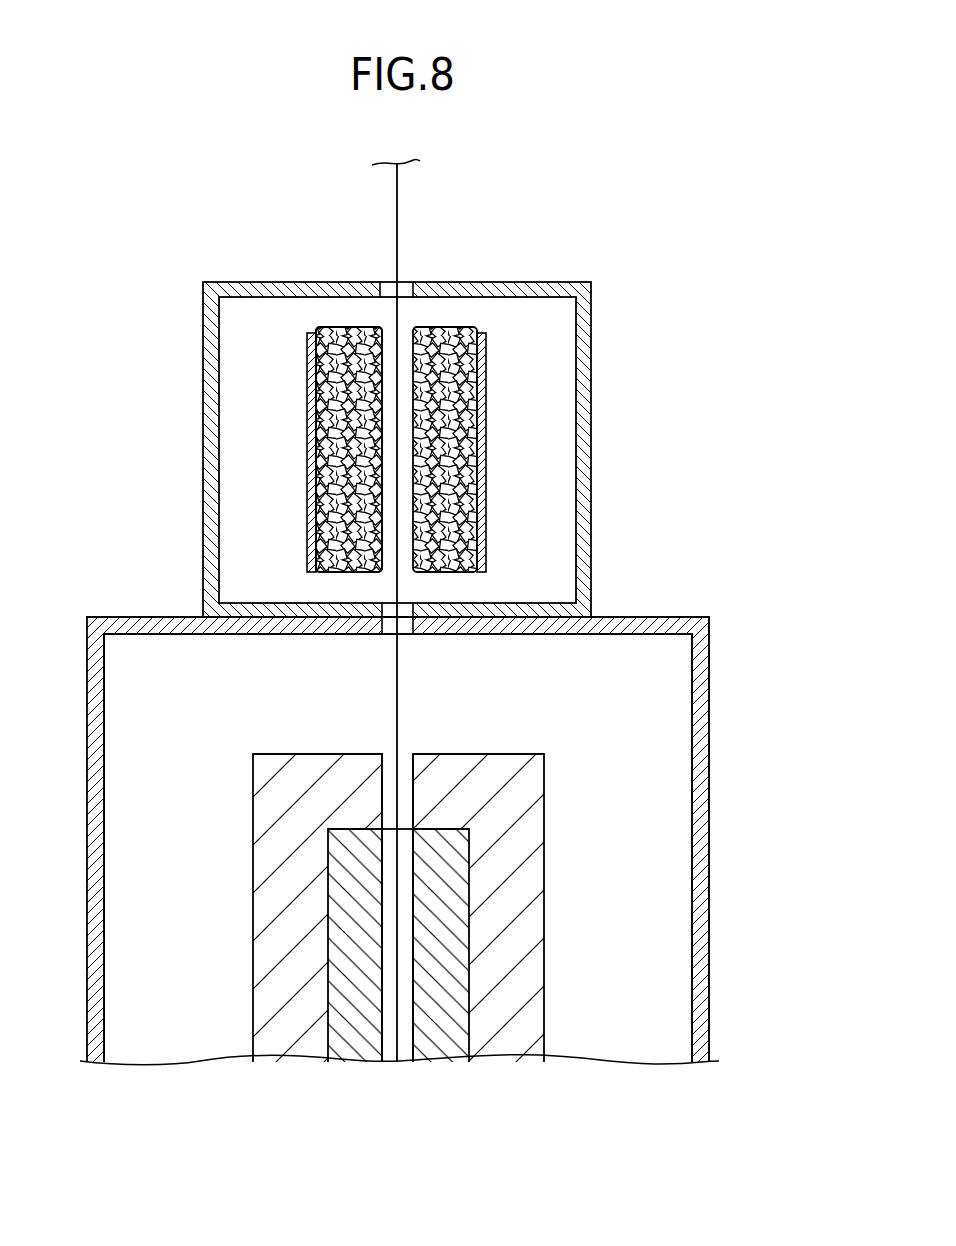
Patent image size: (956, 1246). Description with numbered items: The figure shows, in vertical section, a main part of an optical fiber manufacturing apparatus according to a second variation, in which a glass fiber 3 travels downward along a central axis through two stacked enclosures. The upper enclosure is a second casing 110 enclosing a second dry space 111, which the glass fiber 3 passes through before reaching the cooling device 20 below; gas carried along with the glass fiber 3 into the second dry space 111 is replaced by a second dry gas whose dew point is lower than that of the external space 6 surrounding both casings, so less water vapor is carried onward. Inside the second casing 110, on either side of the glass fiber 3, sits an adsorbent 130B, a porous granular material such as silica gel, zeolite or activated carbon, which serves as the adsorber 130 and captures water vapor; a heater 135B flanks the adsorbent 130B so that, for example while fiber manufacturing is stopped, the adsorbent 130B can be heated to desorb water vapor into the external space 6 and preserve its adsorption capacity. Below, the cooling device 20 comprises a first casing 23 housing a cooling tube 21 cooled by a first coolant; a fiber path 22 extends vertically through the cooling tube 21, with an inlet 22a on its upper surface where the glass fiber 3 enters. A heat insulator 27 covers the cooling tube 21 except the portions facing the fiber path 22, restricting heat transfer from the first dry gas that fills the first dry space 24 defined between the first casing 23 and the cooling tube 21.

The glass fiber 3 is at (399, 193).
The external space 6 is at (221, 260).
The second casing 110 is at (552, 290).
The second dry space 111 is at (275, 456).
The adsorber 130 is at (330, 370).
The adsorbent 130B is at (341, 319).
The heater 135B is at (310, 372).
The cooling device 20 is at (722, 797).
The cooling tube 21 is at (457, 937).
The fiber path 22 is at (408, 1008).
The inlet 22a is at (405, 829).
The first casing 23 is at (703, 948).
The first dry space 24 is at (178, 843).
The heat insulator 27 is at (262, 942).